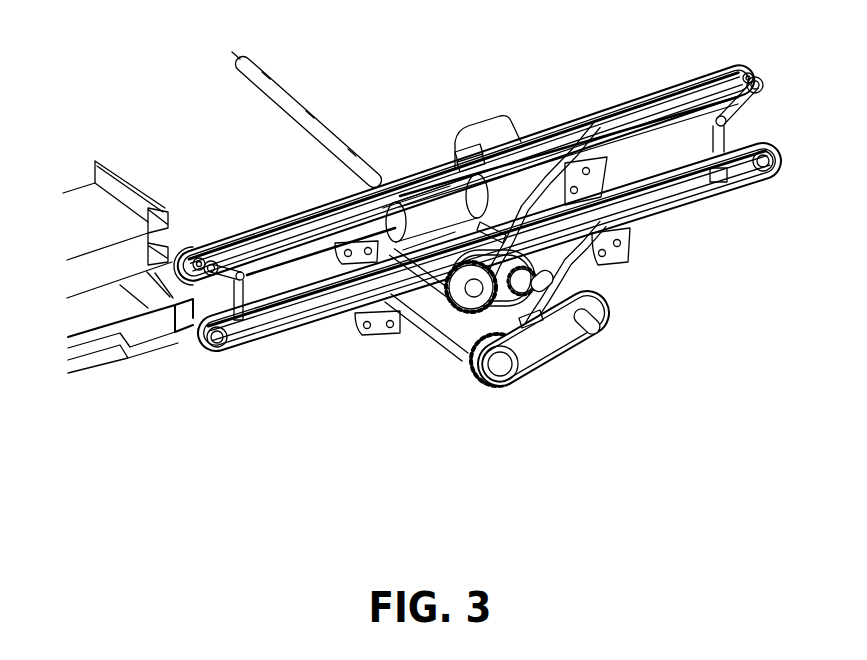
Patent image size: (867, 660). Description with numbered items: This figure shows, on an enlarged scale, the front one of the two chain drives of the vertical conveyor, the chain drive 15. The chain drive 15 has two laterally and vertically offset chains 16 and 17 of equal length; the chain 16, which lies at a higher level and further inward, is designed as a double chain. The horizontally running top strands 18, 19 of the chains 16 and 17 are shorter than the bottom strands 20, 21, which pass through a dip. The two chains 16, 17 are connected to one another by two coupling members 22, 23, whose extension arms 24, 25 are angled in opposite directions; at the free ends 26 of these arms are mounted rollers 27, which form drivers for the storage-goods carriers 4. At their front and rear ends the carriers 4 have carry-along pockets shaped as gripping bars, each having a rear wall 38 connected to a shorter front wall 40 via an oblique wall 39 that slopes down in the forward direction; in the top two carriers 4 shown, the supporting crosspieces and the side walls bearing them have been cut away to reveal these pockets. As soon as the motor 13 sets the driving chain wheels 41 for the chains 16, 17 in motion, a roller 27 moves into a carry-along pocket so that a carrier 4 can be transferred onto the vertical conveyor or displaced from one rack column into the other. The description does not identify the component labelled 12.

The storage-goods carrier 4 is at (100, 212).
The guide rod 12 is at (302, 117).
The motor 13 is at (482, 137).
The chain drive 15 is at (484, 425).
The chain 16 is at (586, 100).
The chain 17 is at (642, 165).
The top strand 18 is at (252, 242).
The top strand 19 is at (303, 290).
The bottom strand 20 is at (272, 258).
The bottom strand 21 is at (337, 313).
The coupling member 22 is at (243, 297).
The coupling member 23 is at (748, 132).
The extension arm 24 is at (238, 271).
The extension arm 25 is at (748, 105).
The free end 26 is at (200, 258).
The roller 27 is at (212, 261).
The rear wall 38 is at (107, 183).
The oblique wall 39 is at (115, 165).
The front wall 40 is at (165, 200).
The driving chain wheel 41 is at (468, 296).